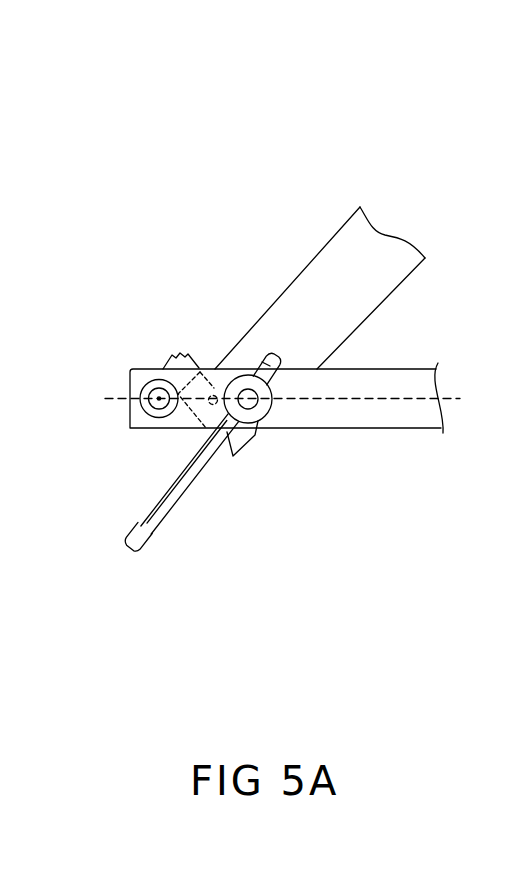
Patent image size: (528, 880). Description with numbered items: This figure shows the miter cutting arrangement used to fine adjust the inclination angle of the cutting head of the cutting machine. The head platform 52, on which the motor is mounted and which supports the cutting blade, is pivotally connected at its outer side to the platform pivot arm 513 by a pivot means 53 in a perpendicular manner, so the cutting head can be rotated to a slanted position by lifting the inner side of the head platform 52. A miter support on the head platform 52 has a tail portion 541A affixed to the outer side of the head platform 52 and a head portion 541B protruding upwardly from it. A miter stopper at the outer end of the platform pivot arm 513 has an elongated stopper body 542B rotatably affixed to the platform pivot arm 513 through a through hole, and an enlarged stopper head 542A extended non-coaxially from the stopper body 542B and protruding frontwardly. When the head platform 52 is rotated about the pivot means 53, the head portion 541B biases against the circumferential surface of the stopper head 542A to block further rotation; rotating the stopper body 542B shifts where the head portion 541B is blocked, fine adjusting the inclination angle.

The head platform 52 is at (367, 258).
The platform pivot arm 513 is at (378, 408).
The pivot means 53 is at (252, 408).
The tail portion 541A is at (208, 393).
The head portion 541B is at (187, 354).
The stopper head 542A is at (158, 380).
The stopper body 542B is at (156, 397).